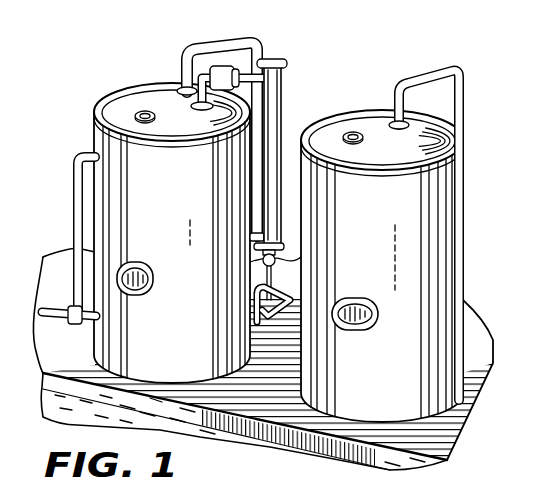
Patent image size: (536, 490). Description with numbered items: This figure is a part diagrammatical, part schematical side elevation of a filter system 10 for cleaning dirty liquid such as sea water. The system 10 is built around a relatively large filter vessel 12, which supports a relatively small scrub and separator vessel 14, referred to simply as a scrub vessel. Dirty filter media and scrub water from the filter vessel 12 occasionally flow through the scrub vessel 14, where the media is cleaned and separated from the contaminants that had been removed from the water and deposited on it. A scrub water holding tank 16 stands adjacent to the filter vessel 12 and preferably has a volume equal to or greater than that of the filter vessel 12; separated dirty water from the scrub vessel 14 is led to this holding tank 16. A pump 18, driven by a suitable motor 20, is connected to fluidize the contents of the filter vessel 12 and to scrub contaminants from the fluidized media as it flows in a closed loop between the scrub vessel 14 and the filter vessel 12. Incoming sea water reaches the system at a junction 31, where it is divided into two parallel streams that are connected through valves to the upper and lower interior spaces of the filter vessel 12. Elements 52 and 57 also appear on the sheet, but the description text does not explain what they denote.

The filter system 10 is at (131, 53).
The filter vessel 12 is at (85, 133).
The scrub and separator vessel 14 is at (284, 46).
The scrub water holding tank 16 is at (372, 94).
The pump 18 is at (222, 65).
The junction 31 is at (75, 325).
The element 52 is at (218, 489).
The element 57 is at (313, 482).
The motor 20 is at (474, 482).